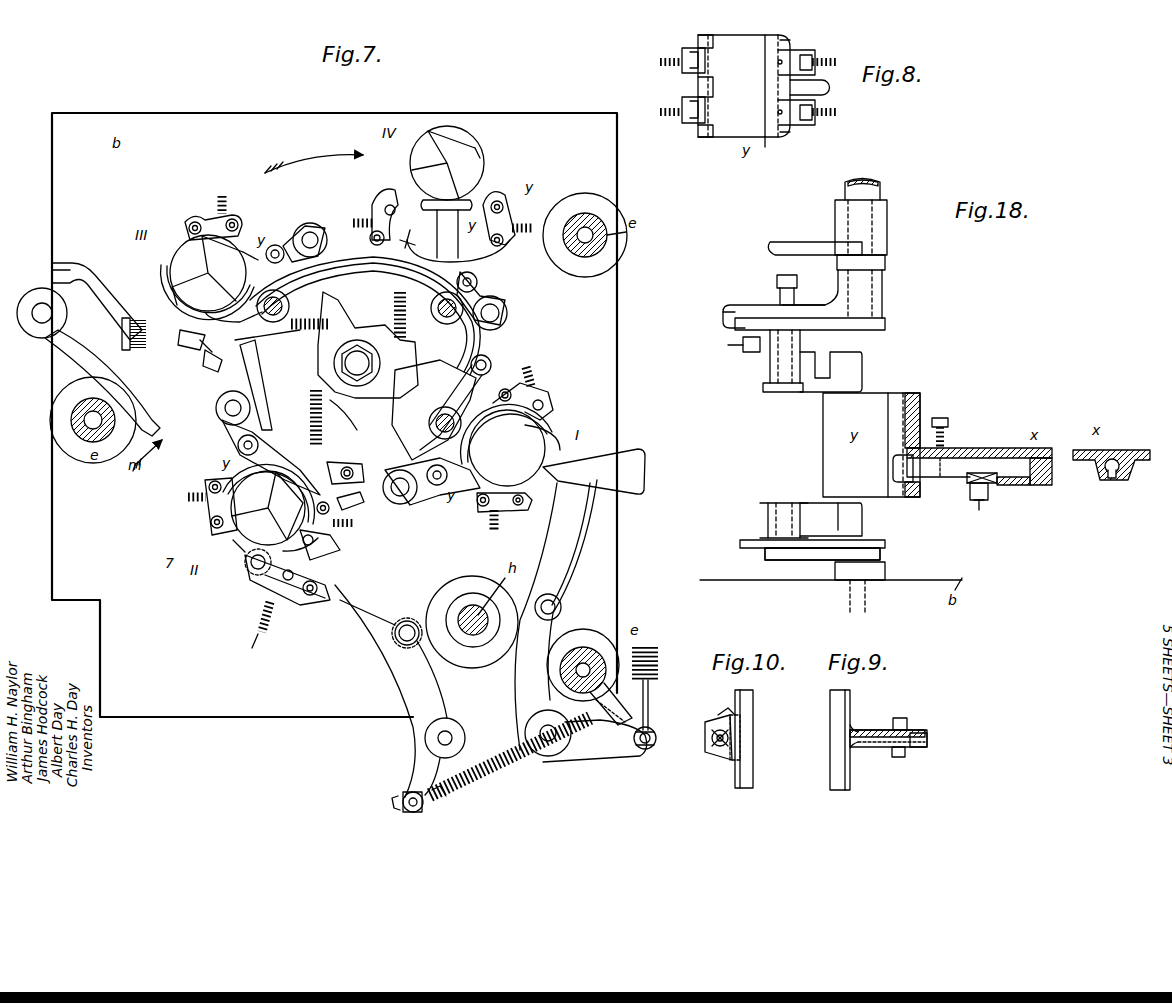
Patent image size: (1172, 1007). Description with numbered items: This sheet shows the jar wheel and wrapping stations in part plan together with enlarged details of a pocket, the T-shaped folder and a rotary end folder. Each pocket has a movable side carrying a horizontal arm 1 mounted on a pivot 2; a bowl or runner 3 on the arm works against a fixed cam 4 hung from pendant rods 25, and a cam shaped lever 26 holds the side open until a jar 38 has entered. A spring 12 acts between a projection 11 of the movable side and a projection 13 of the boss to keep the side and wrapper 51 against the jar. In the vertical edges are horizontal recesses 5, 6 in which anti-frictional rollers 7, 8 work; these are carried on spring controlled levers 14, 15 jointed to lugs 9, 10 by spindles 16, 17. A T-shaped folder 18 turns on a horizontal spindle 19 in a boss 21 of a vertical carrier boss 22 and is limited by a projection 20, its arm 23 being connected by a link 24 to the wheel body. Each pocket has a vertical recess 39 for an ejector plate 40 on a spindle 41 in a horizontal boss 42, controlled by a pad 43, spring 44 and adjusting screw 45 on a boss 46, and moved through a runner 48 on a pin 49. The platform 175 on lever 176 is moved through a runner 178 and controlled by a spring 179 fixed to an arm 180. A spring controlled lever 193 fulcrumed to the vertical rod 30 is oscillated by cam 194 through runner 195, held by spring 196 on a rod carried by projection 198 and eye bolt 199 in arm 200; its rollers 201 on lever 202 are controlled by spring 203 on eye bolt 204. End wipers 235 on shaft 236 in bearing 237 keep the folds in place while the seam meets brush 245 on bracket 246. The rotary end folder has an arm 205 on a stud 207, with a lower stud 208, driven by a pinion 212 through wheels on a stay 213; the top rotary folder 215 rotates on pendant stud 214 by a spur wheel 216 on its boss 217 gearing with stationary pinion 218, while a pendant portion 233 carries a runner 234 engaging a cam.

In FIG. 7, the horizontal projecting arm 1 is at (305, 235).
In FIG. 7, the pivot 2 is at (425, 500).
In FIG. 7, the bowl or runner 3 is at (393, 512).
In FIG. 8, the bowl or runner 3 is at (795, 45).
In FIG. 7, the fixed cam 4 is at (380, 268).
In FIG. 8, the horizontal recess 5 is at (710, 45).
In FIG. 8, the horizontal recess 6 is at (812, 52).
In FIG. 7, the anti-frictional roller 7 is at (528, 501).
In FIG. 8, the anti-frictional roller 7 is at (707, 62).
In FIG. 8, the anti-frictional roller 8 is at (778, 63).
In FIG. 7, the lug 9 is at (234, 218).
In FIG. 7, the lug 10 is at (355, 226).
In FIG. 7, the projection 11 is at (345, 460).
In FIG. 7, the spring 12 is at (397, 296).
In FIG. 7, the projection of the boss 13 is at (400, 338).
In FIG. 7, the spring controlled lever 14 is at (195, 222).
In FIG. 8, the spring controlled lever 14 is at (678, 70).
In FIG. 7, the spring controlled lever 15 is at (385, 205).
In FIG. 8, the spring controlled lever 15 is at (822, 122).
In FIG. 7, the spindle 16 is at (212, 480).
In FIG. 7, the spindle 17 is at (353, 500).
In FIG. 9, the spindle 17 is at (905, 750).
In FIG. 7, the T-shaped folder 18 is at (550, 425).
In FIG. 8, the T-shaped folder 18 is at (772, 142).
In FIG. 10, the T-shaped folder 18 is at (753, 748).
In FIG. 9, the T-shaped folder 18 is at (830, 738).
In FIG. 7, the horizontal spindle 19 is at (492, 364).
In FIG. 10, the horizontal spindle 19 is at (716, 746).
In FIG. 9, the horizontal spindle 19 is at (927, 745).
In FIG. 7, the projection 20 is at (546, 396).
In FIG. 10, the projection 20 is at (720, 724).
In FIG. 10, the boss or bearing 21 is at (728, 714).
In FIG. 10, the vertical carrier boss 22 is at (742, 728).
In FIG. 9, the vertical carrier boss 22 is at (907, 724).
In FIG. 7, the arm or lever 23 is at (302, 380).
In FIG. 7, the link 24 is at (267, 380).
In FIG. 7, the pendant rod 25 is at (296, 300).
In FIG. 7, the cam shaped lever 26 is at (434, 410).
In FIG. 7, the vertical rod 30 is at (438, 738).
In FIG. 7, the jar 38 is at (190, 262).
In FIG. 7, the vertical recess 39 is at (500, 256).
In FIG. 7, the ejector plate 40 is at (470, 205).
In FIG. 18, the ejector plate 40 is at (888, 410).
In FIG. 7, the spindle 41 is at (437, 228).
In FIG. 18, the spindle 41 is at (898, 466).
In FIG. 18, the horizontal boss 42 is at (1128, 468).
In FIG. 18, the pad 43 is at (938, 467).
In FIG. 18, the spring 44 is at (952, 448).
In FIG. 18, the adjusting screw 45 is at (940, 418).
In FIG. 18, the boss 46 is at (948, 430).
In FIG. 18, the bowl or runner 48 is at (990, 490).
In FIG. 18, the pin 49 is at (980, 508).
In FIG. 7, the wrapper 51 is at (207, 292).
In FIG. 7, the platform 175 is at (594, 471).
In FIG. 7, the lever 176 is at (556, 615).
In FIG. 7, the runner 178 is at (561, 608).
In FIG. 7, the spring 179 is at (658, 645).
In FIG. 7, the arm 180 is at (612, 750).
In FIG. 7, the spring controlled lever 193 is at (375, 648).
In FIG. 7, the cam 194 is at (463, 582).
In FIG. 7, the runner 195 is at (396, 634).
In FIG. 7, the spring 196 is at (482, 778).
In FIG. 7, the projection 198 is at (565, 700).
In FIG. 7, the eye bolt 199 is at (405, 798).
In FIG. 7, the arm 200 is at (410, 760).
In FIG. 7, the spring controlled roller 201 is at (245, 568).
In FIG. 7, the lever 202 is at (295, 600).
In FIG. 7, the spring 203 is at (268, 630).
In FIG. 7, the eye bolt 204 is at (253, 651).
In FIG. 18, the arm 205 is at (884, 302).
In FIG. 18, the stud 207 is at (870, 192).
In FIG. 18, the stud 208 is at (770, 557).
In FIG. 18, the pinion 212 is at (887, 265).
In FIG. 18, the stay 213 is at (883, 232).
In FIG. 18, the pendant stud 214 is at (780, 390).
In FIG. 18, the top rotary folder 215 is at (862, 360).
In FIG. 18, the spur wheel 216 is at (728, 306).
In FIG. 18, the boss 217 is at (802, 346).
In FIG. 18, the stationary pinion 218 is at (887, 324).
In FIG. 18, the pendant portion 233 is at (723, 326).
In FIG. 18, the runner 234 is at (750, 352).
In FIG. 7, the end wiper 235 is at (120, 383).
In FIG. 18, the end wiper 235 is at (860, 330).
In FIG. 7, the shaft 236 is at (38, 320).
In FIG. 7, the bearing 237 is at (40, 290).
In FIG. 7, the brush 245 is at (135, 316).
In FIG. 7, the bracket 246 is at (90, 270).